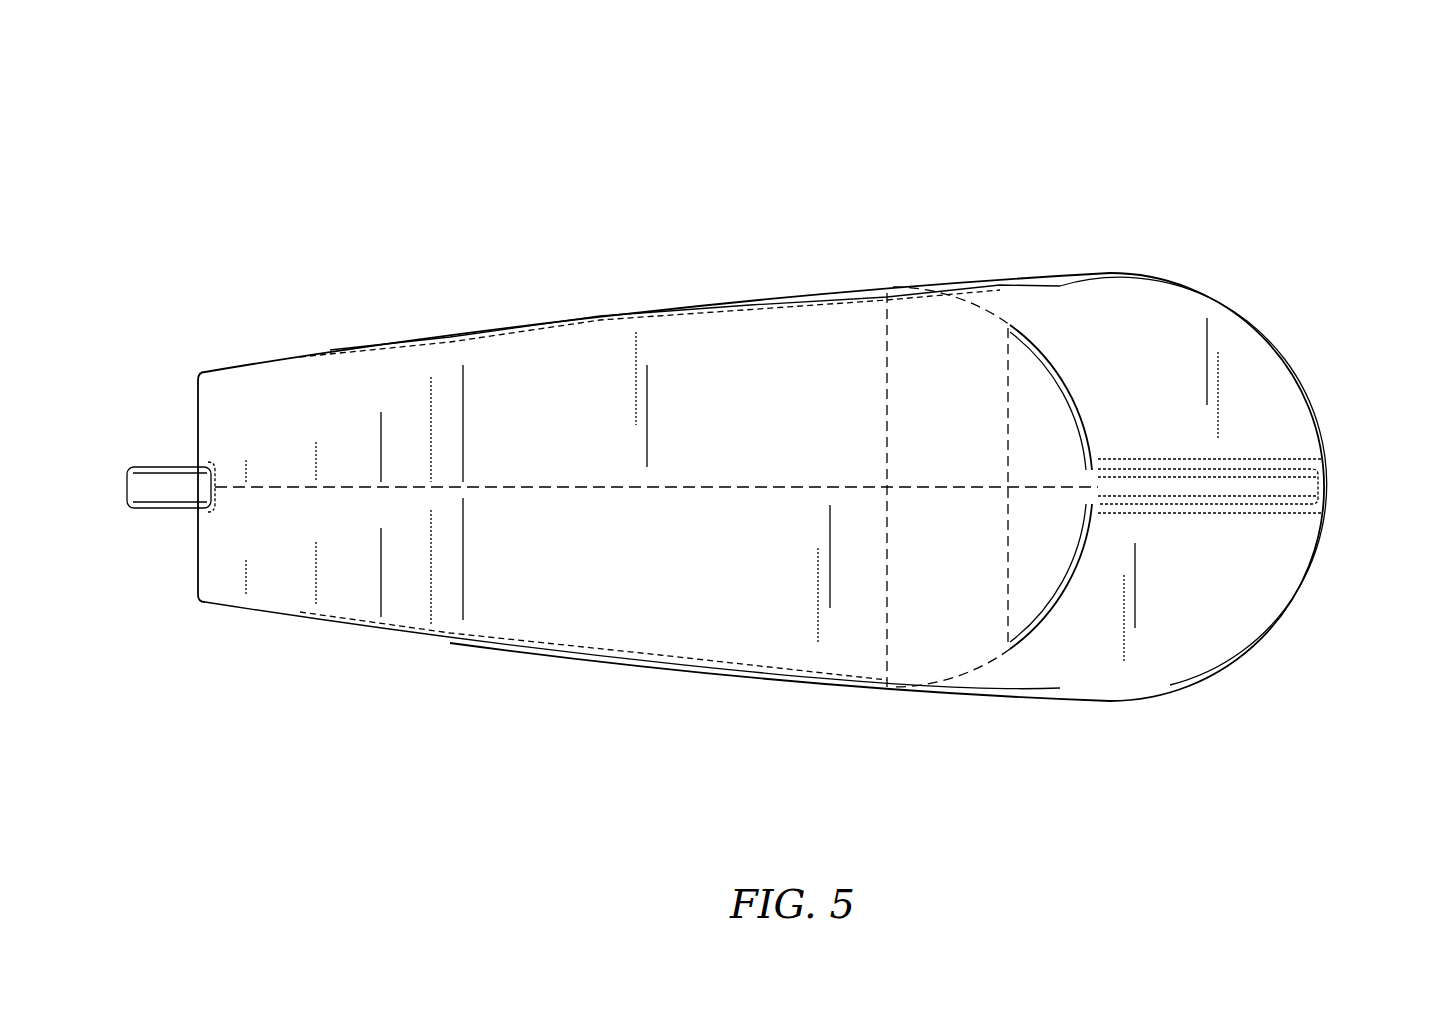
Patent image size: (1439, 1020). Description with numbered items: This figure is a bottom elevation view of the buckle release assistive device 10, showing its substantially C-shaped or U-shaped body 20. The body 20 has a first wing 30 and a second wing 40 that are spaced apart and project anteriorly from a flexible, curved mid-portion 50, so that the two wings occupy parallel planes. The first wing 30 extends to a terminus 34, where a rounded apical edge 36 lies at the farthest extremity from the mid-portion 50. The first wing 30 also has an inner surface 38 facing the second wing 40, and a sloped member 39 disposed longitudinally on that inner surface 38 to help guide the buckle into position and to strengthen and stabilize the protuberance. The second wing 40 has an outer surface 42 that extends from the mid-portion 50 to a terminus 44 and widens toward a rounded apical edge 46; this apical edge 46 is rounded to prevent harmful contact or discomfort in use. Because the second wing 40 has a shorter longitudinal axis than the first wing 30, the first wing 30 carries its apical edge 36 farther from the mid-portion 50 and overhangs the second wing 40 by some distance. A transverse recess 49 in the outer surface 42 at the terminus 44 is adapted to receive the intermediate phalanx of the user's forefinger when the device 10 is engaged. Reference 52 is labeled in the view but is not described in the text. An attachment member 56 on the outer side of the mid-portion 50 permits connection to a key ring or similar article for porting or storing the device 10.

The buckle release assistive device 10 is at (1256, 89).
The body 20 is at (375, 262).
The first wing 30 is at (1145, 307).
The terminus 34 is at (1262, 385).
The apical edge 36 is at (1323, 488).
The inner surface 38 is at (1158, 392).
The sloped member 39 is at (1250, 487).
The second wing 40 is at (507, 600).
The outer surface 42 is at (811, 426).
The terminus 44 is at (1040, 425).
The apical edge 46 is at (1078, 575).
The transverse recess 49 is at (970, 595).
The mid-portion 50 is at (198, 427).
The lower end corner 52 is at (198, 558).
The attachment member 56 is at (143, 488).